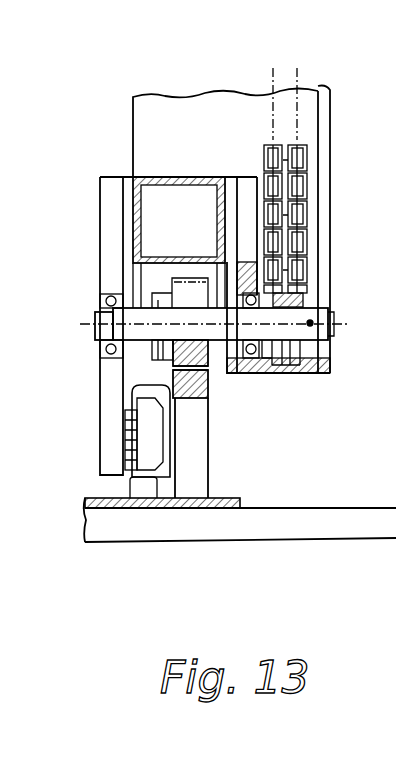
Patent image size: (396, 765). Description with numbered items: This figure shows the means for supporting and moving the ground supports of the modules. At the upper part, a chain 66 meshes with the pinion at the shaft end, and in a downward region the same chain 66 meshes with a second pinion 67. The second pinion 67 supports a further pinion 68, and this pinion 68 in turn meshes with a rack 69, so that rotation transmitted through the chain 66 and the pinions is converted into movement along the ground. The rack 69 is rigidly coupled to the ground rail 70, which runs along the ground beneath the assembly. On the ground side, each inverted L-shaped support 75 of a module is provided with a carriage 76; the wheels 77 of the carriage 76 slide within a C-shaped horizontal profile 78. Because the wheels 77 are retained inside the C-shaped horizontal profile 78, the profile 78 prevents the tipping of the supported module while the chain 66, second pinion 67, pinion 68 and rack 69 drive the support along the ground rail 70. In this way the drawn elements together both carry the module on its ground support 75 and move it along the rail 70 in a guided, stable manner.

The chain 66 is at (295, 208).
The second pinion 67 is at (300, 375).
The pinion 68 is at (187, 292).
The rack 69 is at (208, 398).
The ground rail 70 is at (198, 477).
The inverted L-shaped support 75 is at (210, 112).
The carriage 76 is at (108, 385).
The wheels 77 is at (143, 442).
The C-shaped horizontal profile 78 is at (157, 500).